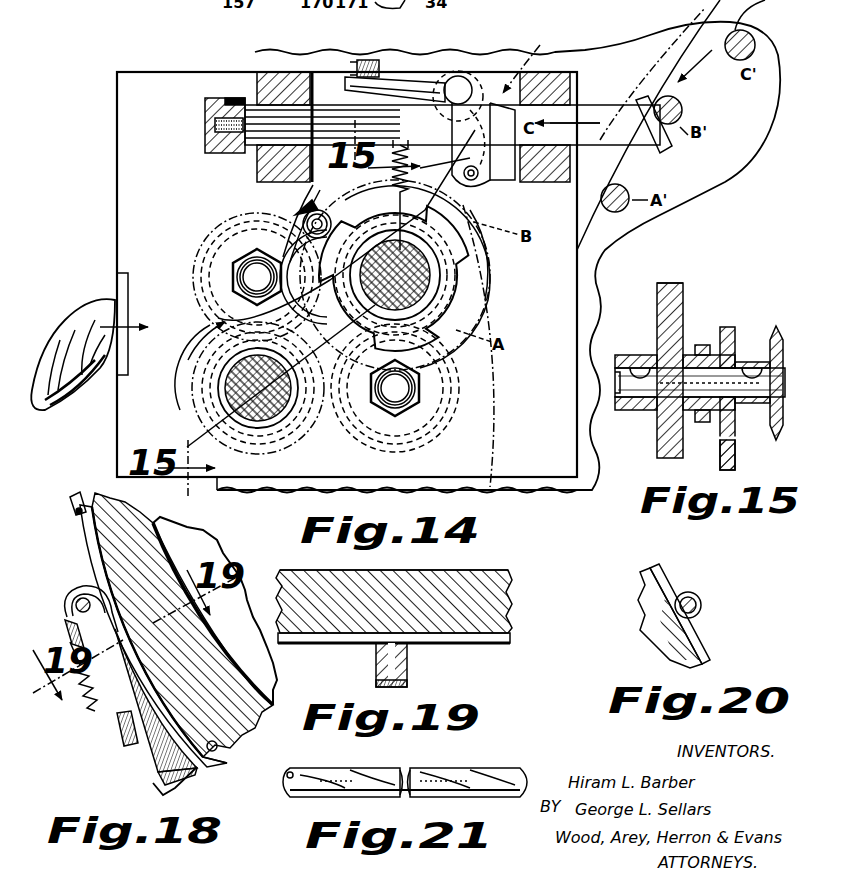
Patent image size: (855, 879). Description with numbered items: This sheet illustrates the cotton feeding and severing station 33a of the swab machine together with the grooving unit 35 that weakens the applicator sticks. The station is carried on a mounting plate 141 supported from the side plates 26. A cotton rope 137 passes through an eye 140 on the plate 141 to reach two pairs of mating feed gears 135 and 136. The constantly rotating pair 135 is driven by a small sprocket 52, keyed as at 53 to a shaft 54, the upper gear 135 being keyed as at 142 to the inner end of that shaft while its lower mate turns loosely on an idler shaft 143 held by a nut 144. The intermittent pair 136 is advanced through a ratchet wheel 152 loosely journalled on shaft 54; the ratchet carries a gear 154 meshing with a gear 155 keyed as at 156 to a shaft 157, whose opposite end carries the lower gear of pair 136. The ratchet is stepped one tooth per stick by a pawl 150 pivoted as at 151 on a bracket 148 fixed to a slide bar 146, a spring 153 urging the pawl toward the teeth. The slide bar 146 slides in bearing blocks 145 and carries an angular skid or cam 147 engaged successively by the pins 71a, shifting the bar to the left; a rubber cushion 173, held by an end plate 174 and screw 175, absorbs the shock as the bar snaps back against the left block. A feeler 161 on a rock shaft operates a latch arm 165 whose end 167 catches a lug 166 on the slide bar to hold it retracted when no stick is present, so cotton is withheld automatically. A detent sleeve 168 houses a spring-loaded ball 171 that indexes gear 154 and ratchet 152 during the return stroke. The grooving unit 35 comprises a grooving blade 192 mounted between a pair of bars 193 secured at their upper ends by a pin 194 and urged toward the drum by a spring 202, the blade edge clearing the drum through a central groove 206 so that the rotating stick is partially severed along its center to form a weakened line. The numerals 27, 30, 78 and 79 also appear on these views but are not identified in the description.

In FIG. 14, the side plates 26 is at (755, 136).
In FIG. 18, the pin 27 is at (76, 511).
In FIG. 19, the pin 27 is at (500, 643).
In FIG. 20, the pin 27 is at (690, 592).
In FIG. 21, the pin 27 is at (497, 778).
In FIG. 14, the plate 30 is at (474, 432).
In FIG. 19, the plate 30 is at (490, 588).
In FIG. 14, the cotton feeding and severing station 33a is at (150, 180).
In FIG. 15, the cotton feeding and severing station 33a is at (670, 288).
In FIG. 18, the grooving unit 35 is at (140, 693).
In FIG. 15, the small sprocket 52 is at (778, 344).
In FIG. 15, the key 53 is at (752, 366).
In FIG. 14, the shaft 54 is at (428, 268).
In FIG. 15, the shaft 54 is at (748, 384).
In FIG. 14, the pins 71a is at (742, 33).
In FIG. 19, the block 78 is at (330, 583).
In FIG. 18, the curved body 79 is at (142, 533).
In FIG. 14, the constantly rotating feed gears 135 is at (470, 254).
In FIG. 15, the constantly rotating feed gears 135 is at (622, 360).
In FIG. 14, the intermittent feed gears 136 is at (206, 246).
In FIG. 14, the cotton rope 137 is at (74, 326).
In FIG. 14, the eye 140 is at (122, 283).
In FIG. 14, the mounting plate 141 is at (148, 88).
In FIG. 15, the mounting plate 141 is at (682, 292).
In FIG. 15, the key 142 is at (640, 368).
In FIG. 14, the idler shaft 143 is at (250, 280).
In FIG. 14, the nut 144 is at (256, 264).
In FIG. 14, the bearing blocks 145 is at (284, 80).
In FIG. 14, the slide bar 146 is at (595, 110).
In FIG. 14, the angular skid or cam 147 is at (650, 100).
In FIG. 14, the bracket 148 is at (500, 182).
In FIG. 14, the pawl 150 is at (478, 222).
In FIG. 14, the pivot 151 is at (468, 175).
In FIG. 14, the ratchet wheel 152 is at (470, 302).
In FIG. 15, the ratchet wheel 152 is at (702, 345).
In FIG. 14, the spring 153 is at (396, 186).
In FIG. 14, the gear 154 is at (478, 350).
In FIG. 15, the gear 154 is at (727, 327).
In FIG. 14, the gear 155 is at (208, 400).
In FIG. 15, the gear 155 is at (738, 455).
In FIG. 14, the key 156 is at (258, 358).
In FIG. 14, the shaft 157 is at (222, 410).
In FIG. 14, the feeler 161 is at (476, 131).
In FIG. 14, the latch arm 165 is at (417, 86).
In FIG. 14, the lug 166 is at (388, 100).
In FIG. 14, the end of latch arm 167 is at (345, 80).
In FIG. 14, the sleeve 168 is at (308, 222).
In FIG. 14, the ball 171 is at (317, 210).
In FIG. 14, the cushion 173 is at (232, 98).
In FIG. 14, the end plate 174 is at (206, 106).
In FIG. 14, the screw 175 is at (216, 126).
In FIG. 18, the grooving blade 192 is at (68, 617).
In FIG. 19, the grooving blade 192 is at (408, 661).
In FIG. 20, the grooving blade 192 is at (692, 638).
In FIG. 18, the bars 193 is at (155, 750).
In FIG. 19, the bars 193 is at (376, 668).
In FIG. 20, the bars 193 is at (665, 634).
In FIG. 18, the pin 194 is at (83, 600).
In FIG. 18, the spring 202 is at (80, 692).
In FIG. 18, the groove 206 is at (80, 547).